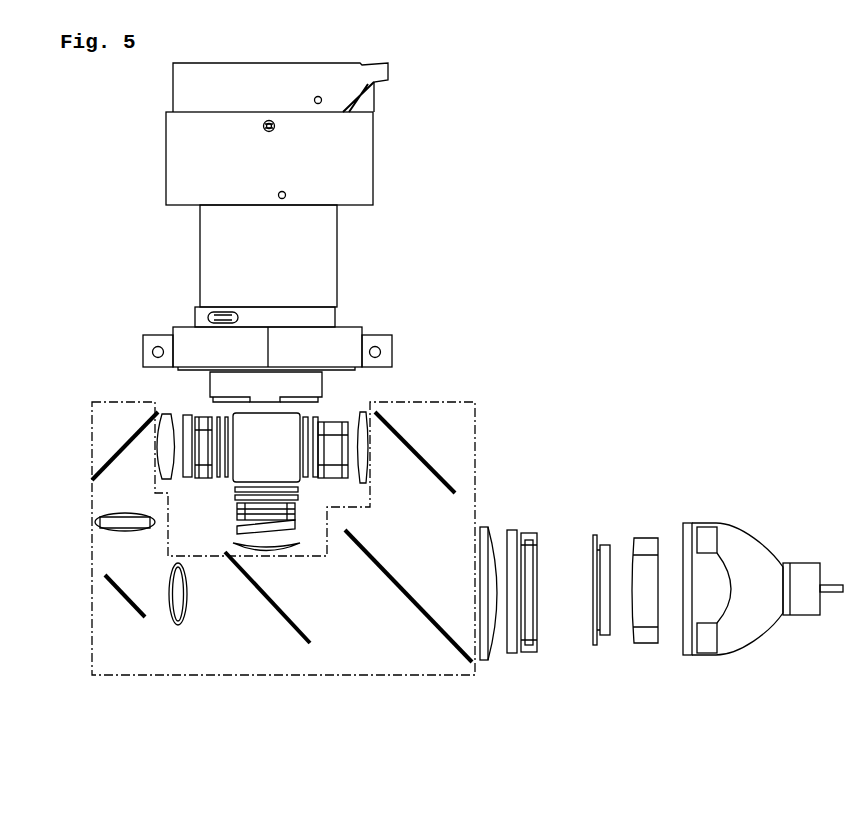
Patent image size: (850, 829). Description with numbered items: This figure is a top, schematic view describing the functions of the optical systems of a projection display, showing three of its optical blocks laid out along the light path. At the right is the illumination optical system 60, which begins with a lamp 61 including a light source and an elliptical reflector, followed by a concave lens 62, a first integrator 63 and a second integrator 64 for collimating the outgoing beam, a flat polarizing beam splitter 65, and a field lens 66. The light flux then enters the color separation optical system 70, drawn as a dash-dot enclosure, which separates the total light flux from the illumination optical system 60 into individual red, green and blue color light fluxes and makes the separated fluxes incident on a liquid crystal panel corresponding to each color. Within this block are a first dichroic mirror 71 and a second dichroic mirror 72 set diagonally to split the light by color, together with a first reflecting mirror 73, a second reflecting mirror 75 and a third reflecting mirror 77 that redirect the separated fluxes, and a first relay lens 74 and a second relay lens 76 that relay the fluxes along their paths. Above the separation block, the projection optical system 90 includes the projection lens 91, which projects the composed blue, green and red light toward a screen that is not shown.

The illumination optical system 60 is at (683, 450).
The lamp 61 is at (745, 537).
The concave lens 62 is at (648, 538).
The first integrator 63 is at (600, 645).
The second integrator 64 is at (530, 530).
The flat polarizing beam splitter 65 is at (512, 653).
The field lens 66 is at (490, 660).
The color separation optical system 70 is at (422, 402).
The first dichroic mirror 71 is at (420, 612).
The second dichroic mirror 72 is at (267, 602).
The first reflecting mirror 73 is at (428, 461).
The first relay lens 74 is at (178, 625).
The second reflecting mirror 75 is at (117, 597).
The second relay lens 76 is at (95, 520).
The third reflecting mirror 77 is at (130, 433).
The projection optical system 90 is at (432, 213).
The projection lens 91 is at (360, 130).